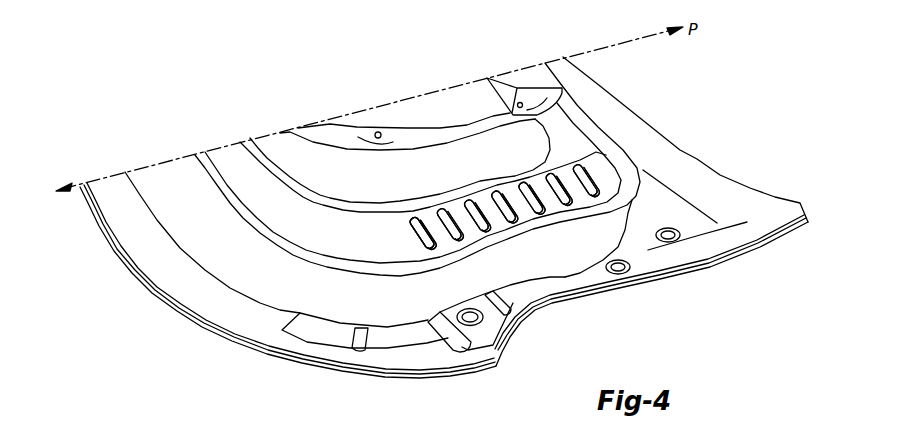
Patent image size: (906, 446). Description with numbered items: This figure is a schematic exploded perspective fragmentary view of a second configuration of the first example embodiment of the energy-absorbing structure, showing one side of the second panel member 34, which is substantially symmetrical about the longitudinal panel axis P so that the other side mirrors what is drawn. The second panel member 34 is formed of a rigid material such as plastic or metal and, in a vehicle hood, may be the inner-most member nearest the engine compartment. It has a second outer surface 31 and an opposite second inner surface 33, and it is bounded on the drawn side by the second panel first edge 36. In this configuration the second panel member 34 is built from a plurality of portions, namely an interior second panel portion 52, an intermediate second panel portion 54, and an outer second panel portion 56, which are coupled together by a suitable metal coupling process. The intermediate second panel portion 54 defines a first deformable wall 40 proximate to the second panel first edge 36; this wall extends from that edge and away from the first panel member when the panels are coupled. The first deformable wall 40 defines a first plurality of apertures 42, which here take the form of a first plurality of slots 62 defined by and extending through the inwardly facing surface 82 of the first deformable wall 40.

The second outer surface 31 is at (746, 213).
The second inner surface 33 is at (751, 261).
The second panel member 34 is at (424, 62).
The second panel first edge 36 is at (677, 279).
The first deformable wall 40 is at (383, 249).
The first plurality of apertures 42 is at (555, 185).
The interior second panel portion 52 is at (533, 93).
The intermediate second panel portion 54 is at (580, 117).
The outer second panel portion 56 is at (688, 166).
The first plurality of slots 62 is at (504, 207).
The inwardly facing surface 82 is at (455, 206).